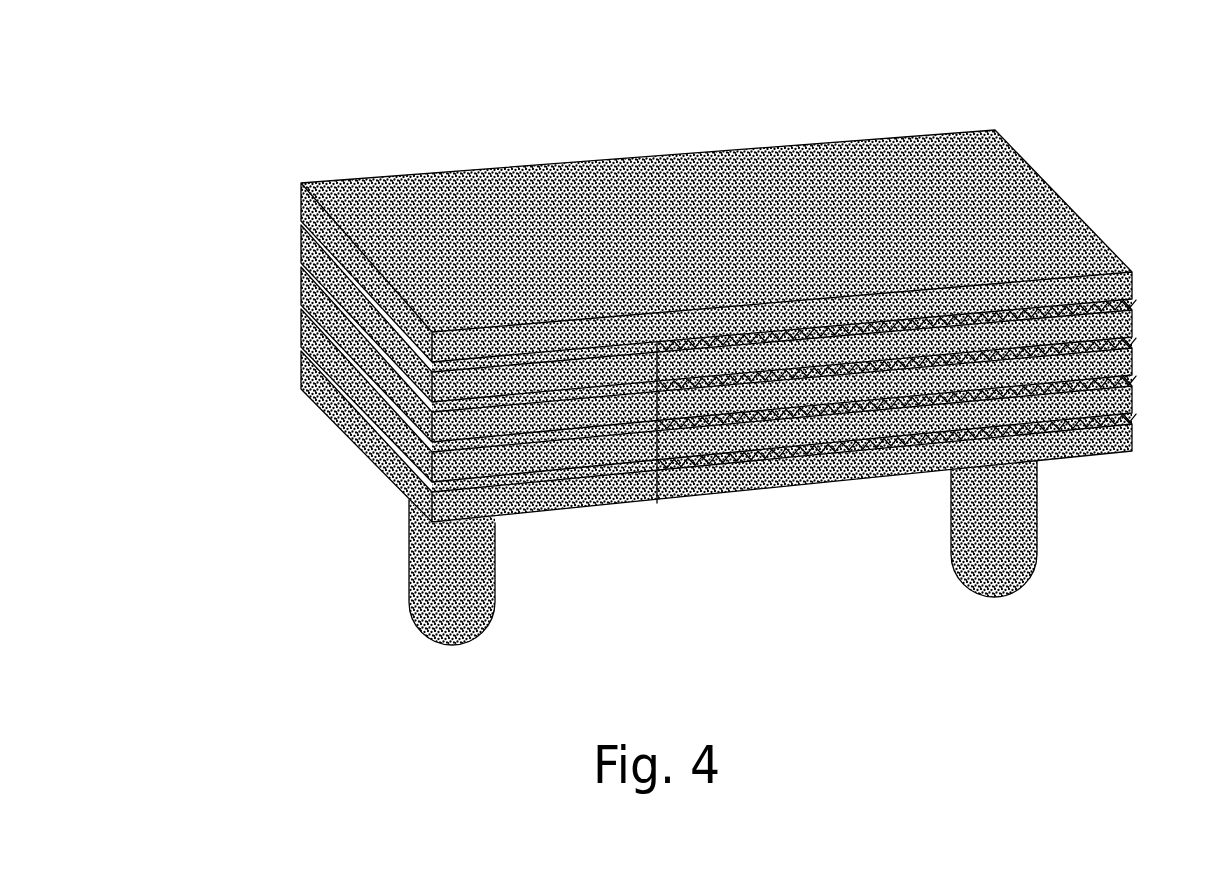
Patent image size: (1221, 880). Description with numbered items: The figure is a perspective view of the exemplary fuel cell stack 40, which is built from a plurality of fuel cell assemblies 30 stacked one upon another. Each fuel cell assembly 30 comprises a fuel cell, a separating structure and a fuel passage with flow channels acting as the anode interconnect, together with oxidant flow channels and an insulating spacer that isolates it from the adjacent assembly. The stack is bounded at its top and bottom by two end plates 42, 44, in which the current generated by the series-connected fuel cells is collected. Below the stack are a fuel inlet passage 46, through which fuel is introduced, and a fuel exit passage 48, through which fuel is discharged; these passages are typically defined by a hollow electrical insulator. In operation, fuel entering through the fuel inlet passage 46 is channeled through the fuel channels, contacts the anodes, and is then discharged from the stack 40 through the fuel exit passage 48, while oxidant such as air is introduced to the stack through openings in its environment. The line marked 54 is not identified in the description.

The fuel cell stack 40 is at (673, 385).
The end plate 42 is at (1043, 207).
The fuel cell assembly 30 is at (1134, 375).
The end plate 44 is at (1083, 458).
The fuel inlet passage 46 is at (415, 613).
The fuel exit passage 48 is at (1037, 548).
The channel line 54 is at (657, 503).